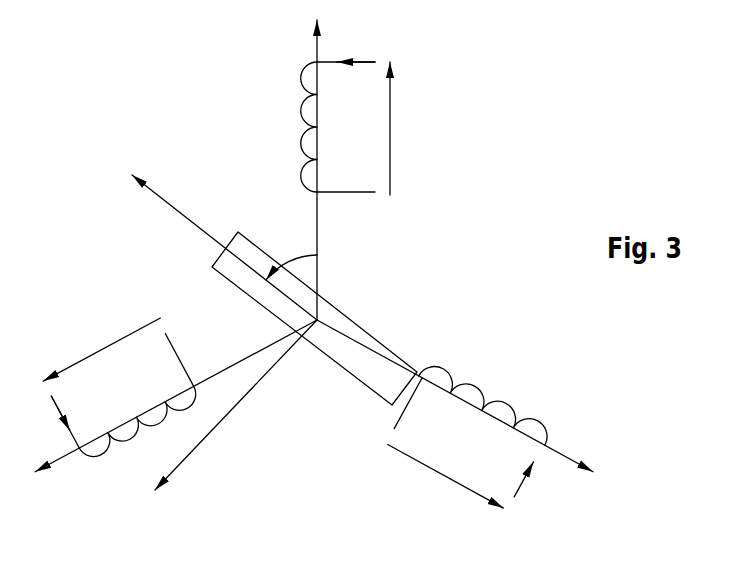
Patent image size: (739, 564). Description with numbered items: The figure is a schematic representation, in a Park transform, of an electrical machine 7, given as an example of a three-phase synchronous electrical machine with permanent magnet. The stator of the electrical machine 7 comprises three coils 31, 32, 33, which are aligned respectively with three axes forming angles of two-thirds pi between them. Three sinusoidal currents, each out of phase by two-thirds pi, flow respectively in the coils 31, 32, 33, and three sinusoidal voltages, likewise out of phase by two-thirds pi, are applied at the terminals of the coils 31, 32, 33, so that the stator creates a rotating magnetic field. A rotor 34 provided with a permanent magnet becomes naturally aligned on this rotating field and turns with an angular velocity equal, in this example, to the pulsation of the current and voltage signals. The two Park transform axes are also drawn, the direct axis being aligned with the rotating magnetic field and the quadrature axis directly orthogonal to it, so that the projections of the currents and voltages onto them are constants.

The electrical machine 7 is at (158, 93).
The coil 31 is at (292, 110).
The coil 32 is at (102, 458).
The coil 33 is at (508, 401).
The rotor 34 is at (338, 312).